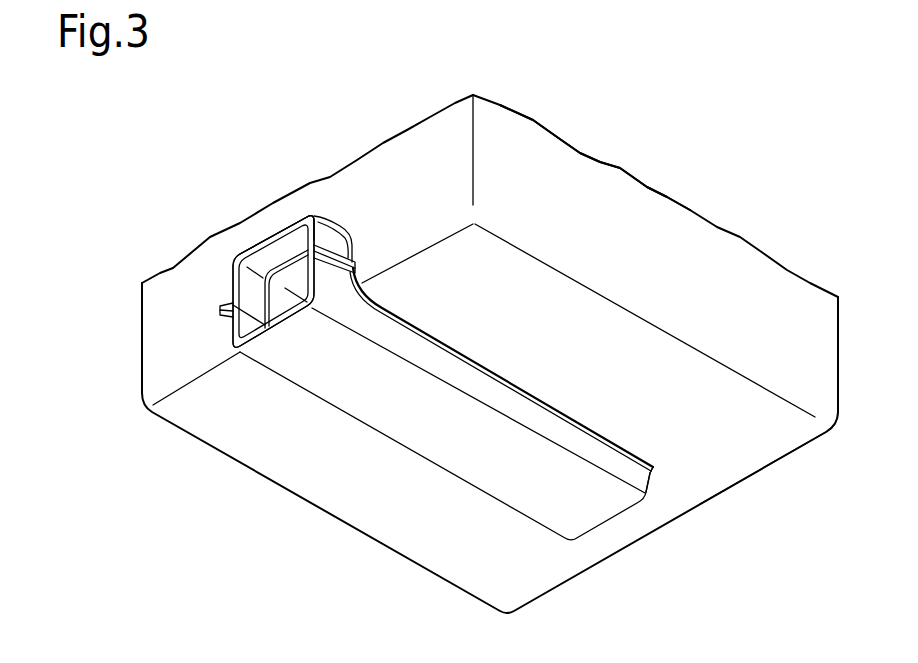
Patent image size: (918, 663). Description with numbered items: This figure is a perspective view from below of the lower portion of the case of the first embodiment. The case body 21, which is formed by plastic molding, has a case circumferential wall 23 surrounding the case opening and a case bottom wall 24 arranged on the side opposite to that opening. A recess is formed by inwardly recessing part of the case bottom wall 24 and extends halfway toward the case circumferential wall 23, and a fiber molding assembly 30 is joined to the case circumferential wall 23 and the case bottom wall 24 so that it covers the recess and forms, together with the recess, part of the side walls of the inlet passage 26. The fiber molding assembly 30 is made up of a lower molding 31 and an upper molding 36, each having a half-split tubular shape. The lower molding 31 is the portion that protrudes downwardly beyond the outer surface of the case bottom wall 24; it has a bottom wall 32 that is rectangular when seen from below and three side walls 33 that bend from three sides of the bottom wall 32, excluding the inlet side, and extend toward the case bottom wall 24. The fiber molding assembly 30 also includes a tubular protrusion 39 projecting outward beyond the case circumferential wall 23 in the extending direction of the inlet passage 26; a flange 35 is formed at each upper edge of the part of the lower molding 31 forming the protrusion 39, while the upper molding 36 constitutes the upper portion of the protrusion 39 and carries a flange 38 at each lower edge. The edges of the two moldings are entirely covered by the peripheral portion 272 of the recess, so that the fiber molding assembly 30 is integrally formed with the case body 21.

The case body 21 is at (263, 485).
The case circumferential wall 23 is at (653, 223).
The case bottom wall 24 is at (732, 438).
The inlet passage 26 is at (259, 257).
The fiber molding assembly 30 is at (86, 250).
The lower molding 31 is at (220, 330).
The bottom wall 32 is at (477, 463).
The side walls 33 is at (505, 400).
The flange 35 is at (333, 274).
The upper molding 36 is at (222, 286).
The flange 38 is at (348, 242).
The protrusion 39 is at (330, 213).
The peripheral portion 272 is at (355, 257).